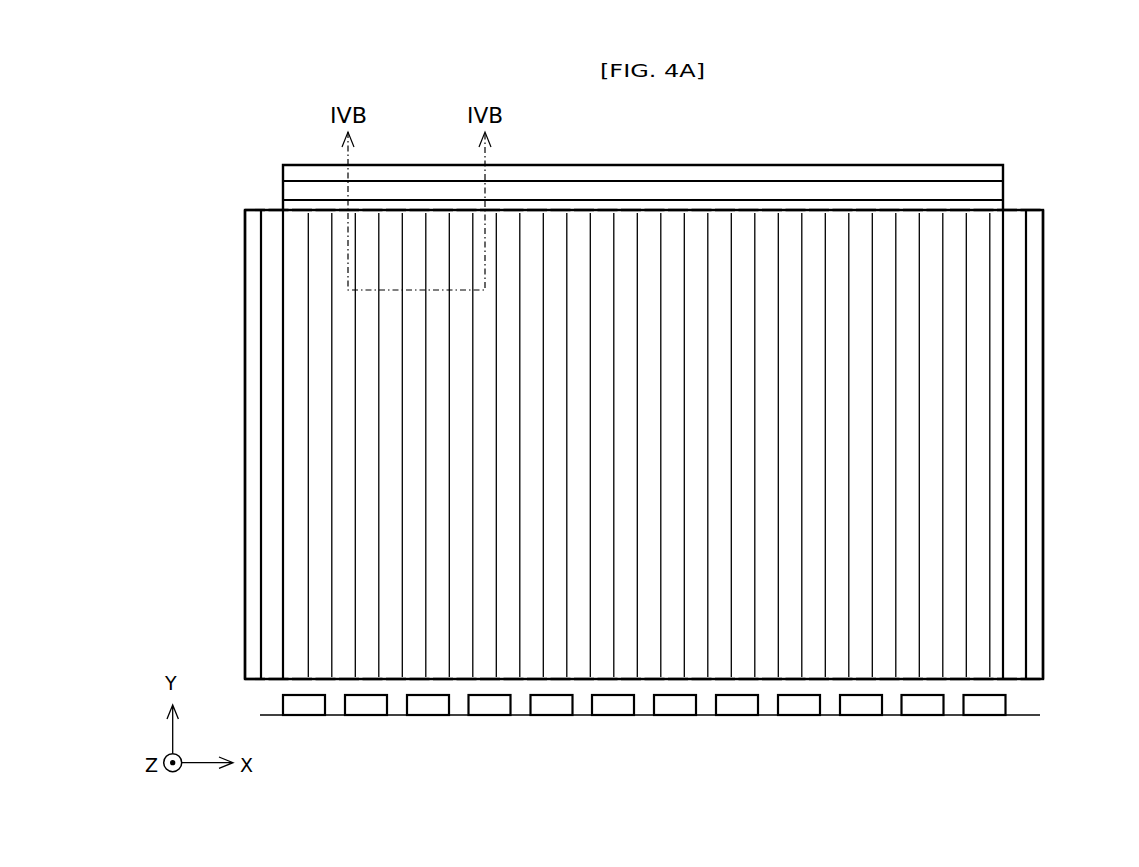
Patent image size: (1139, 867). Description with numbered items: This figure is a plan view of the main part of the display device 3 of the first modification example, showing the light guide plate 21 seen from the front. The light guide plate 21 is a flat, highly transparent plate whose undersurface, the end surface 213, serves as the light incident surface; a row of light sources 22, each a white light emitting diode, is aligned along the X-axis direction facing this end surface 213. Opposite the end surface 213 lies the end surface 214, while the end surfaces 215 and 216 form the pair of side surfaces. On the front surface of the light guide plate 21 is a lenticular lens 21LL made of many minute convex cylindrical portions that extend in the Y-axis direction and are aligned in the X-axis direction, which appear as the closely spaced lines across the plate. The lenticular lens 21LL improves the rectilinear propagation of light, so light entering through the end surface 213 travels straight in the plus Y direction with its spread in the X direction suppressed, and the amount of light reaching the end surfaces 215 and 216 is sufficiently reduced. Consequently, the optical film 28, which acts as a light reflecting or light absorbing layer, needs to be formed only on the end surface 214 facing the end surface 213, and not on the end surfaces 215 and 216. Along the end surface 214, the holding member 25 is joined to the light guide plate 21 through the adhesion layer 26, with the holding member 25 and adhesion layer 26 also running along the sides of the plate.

The display device 3 is at (990, 118).
The light guide plate 21 is at (1014, 203).
The end surface 214 is at (808, 210).
The end surface 213 is at (832, 681).
The end surface 216 is at (261, 260).
The end surface 215 is at (1003, 262).
The holding member 25 is at (255, 331).
The adhesion layer 26 is at (270, 386).
The optical film 28 is at (622, 206).
The lenticular lens 21LL is at (460, 650).
The light sources 22 is at (737, 708).